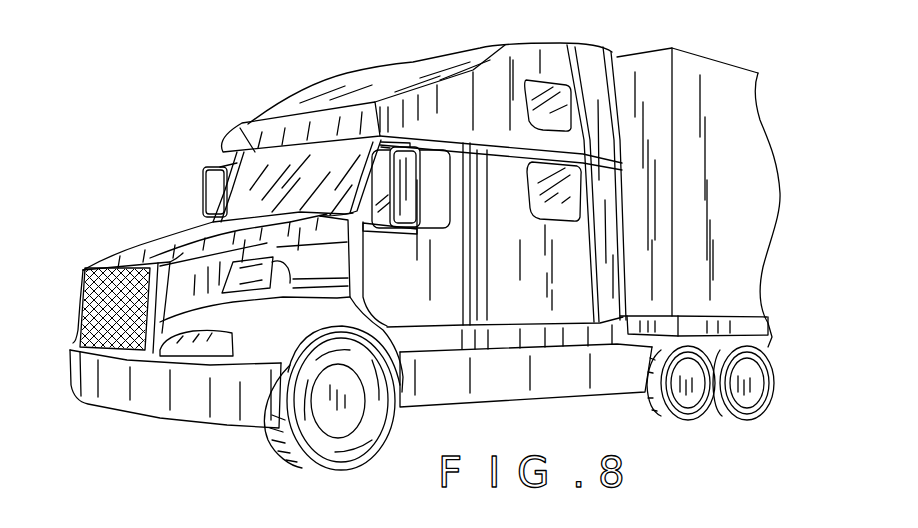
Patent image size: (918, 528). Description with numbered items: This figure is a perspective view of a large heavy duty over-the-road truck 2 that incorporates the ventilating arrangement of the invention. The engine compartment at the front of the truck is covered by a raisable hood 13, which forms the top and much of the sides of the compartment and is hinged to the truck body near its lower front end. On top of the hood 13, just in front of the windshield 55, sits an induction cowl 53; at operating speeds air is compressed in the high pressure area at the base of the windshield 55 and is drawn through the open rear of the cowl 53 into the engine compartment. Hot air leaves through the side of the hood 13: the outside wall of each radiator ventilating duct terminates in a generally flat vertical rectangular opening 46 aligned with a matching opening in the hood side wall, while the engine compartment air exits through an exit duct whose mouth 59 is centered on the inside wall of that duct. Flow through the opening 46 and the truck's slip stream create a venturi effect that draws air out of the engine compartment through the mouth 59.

The truck 2 is at (210, 122).
The hood 13 is at (107, 261).
The opening 46 is at (241, 293).
The induction cowl 53 is at (213, 227).
The windshield 55 is at (253, 178).
The mouth 59 is at (289, 285).